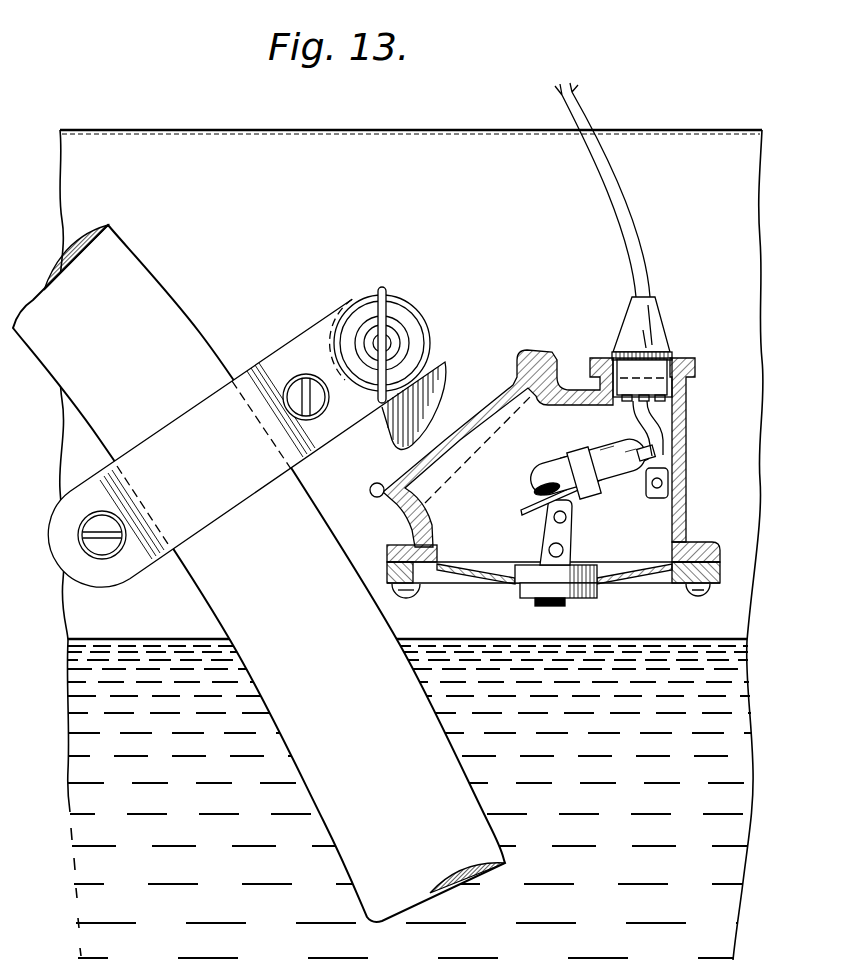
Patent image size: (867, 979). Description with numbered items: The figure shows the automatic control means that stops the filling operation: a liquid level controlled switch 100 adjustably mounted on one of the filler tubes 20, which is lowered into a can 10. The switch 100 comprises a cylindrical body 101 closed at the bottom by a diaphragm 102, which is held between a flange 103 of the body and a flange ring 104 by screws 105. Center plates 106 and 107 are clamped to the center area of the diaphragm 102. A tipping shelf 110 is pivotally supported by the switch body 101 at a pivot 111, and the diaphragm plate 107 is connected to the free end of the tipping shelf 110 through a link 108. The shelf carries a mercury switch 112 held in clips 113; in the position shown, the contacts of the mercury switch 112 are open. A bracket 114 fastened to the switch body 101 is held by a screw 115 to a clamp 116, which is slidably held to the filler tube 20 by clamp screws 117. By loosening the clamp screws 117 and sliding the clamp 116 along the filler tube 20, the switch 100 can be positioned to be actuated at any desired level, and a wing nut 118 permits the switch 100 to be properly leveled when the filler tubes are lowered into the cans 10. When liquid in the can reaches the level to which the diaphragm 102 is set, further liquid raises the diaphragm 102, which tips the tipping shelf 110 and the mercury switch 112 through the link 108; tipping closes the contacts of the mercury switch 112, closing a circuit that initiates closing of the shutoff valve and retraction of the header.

The can 10 is at (438, 131).
The filler tube 20 is at (132, 290).
The liquid level controlled switch 100 is at (694, 383).
The cylindrical body 101 is at (686, 456).
The diaphragm 102 is at (607, 582).
The flange 103 is at (405, 543).
The flange ring 104 is at (422, 586).
The screws 105 is at (710, 594).
The center plate 106 is at (530, 596).
The center plate 107 is at (526, 568).
The link 108 is at (562, 536).
The tipping shelf 110 is at (530, 506).
The pivot 111 is at (652, 493).
The mercury switch 112 is at (560, 463).
The clips 113 is at (571, 447).
The bracket 114 is at (447, 360).
The screw 115 is at (393, 341).
The clamp 116 is at (268, 368).
The clamp screws 117 is at (103, 548).
The wing nut 118 is at (377, 331).